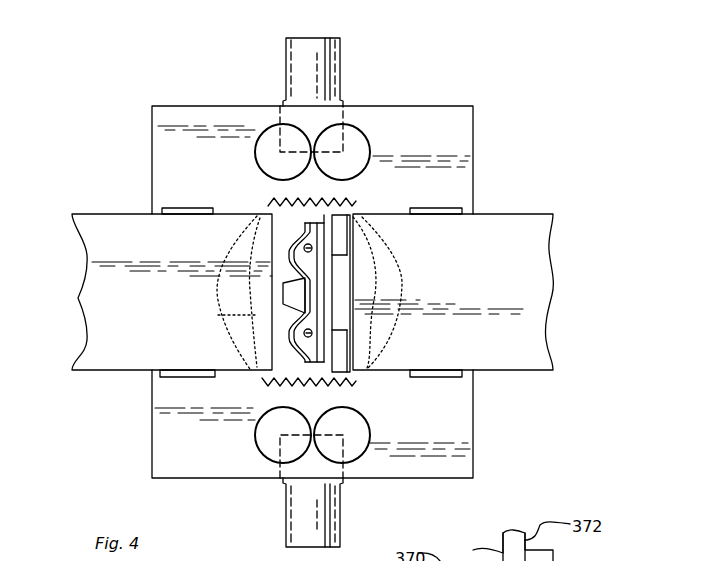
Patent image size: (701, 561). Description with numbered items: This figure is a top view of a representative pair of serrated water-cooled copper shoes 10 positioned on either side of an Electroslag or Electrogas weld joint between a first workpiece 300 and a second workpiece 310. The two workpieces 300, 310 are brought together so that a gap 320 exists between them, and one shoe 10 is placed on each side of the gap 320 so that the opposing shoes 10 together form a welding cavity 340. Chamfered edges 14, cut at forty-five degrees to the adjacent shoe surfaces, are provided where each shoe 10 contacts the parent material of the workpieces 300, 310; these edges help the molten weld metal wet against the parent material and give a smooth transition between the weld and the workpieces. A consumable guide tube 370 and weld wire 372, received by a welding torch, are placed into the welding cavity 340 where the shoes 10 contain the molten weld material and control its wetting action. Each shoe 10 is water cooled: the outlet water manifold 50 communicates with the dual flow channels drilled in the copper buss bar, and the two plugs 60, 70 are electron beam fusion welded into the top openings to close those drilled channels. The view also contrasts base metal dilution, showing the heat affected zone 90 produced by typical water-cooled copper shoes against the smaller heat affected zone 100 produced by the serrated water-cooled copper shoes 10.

The serrated water-cooled copper shoe 10 is at (160, 149).
The chamfered edge 14 is at (268, 205).
The outlet water manifold 50 is at (340, 62).
The plug 60 is at (353, 147).
The plug 70 is at (273, 143).
The heat affected zone 90 is at (220, 305).
The heat affected zone 100 is at (218, 315).
The first workpiece 300 is at (518, 343).
The second workpiece 310 is at (100, 302).
The gap 320 is at (283, 224).
The welding cavity 340 is at (287, 380).
The consumable guide tube 370 is at (313, 248).
The weld wire 372 is at (313, 333).